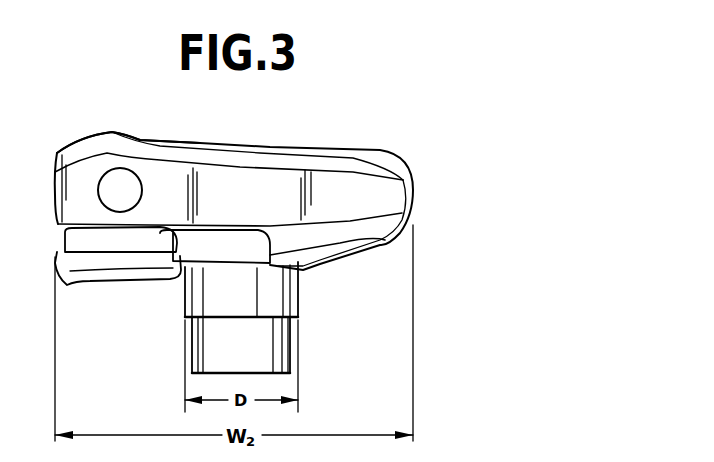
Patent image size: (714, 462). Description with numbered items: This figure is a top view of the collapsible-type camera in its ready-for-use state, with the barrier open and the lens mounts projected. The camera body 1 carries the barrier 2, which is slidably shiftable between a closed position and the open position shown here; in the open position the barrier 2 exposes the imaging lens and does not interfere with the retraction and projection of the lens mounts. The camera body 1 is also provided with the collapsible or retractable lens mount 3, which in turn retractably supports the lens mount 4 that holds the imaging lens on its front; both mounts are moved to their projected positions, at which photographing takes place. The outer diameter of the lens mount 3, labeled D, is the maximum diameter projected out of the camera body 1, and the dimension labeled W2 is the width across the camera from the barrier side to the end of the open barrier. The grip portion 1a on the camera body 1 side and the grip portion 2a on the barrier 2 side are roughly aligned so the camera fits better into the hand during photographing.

The camera body 1 is at (323, 147).
The grip portion 1a is at (112, 132).
The barrier 2 is at (140, 281).
The grip portion 2a is at (89, 282).
The lens mount 3 is at (298, 295).
The lens mount 4 is at (290, 348).